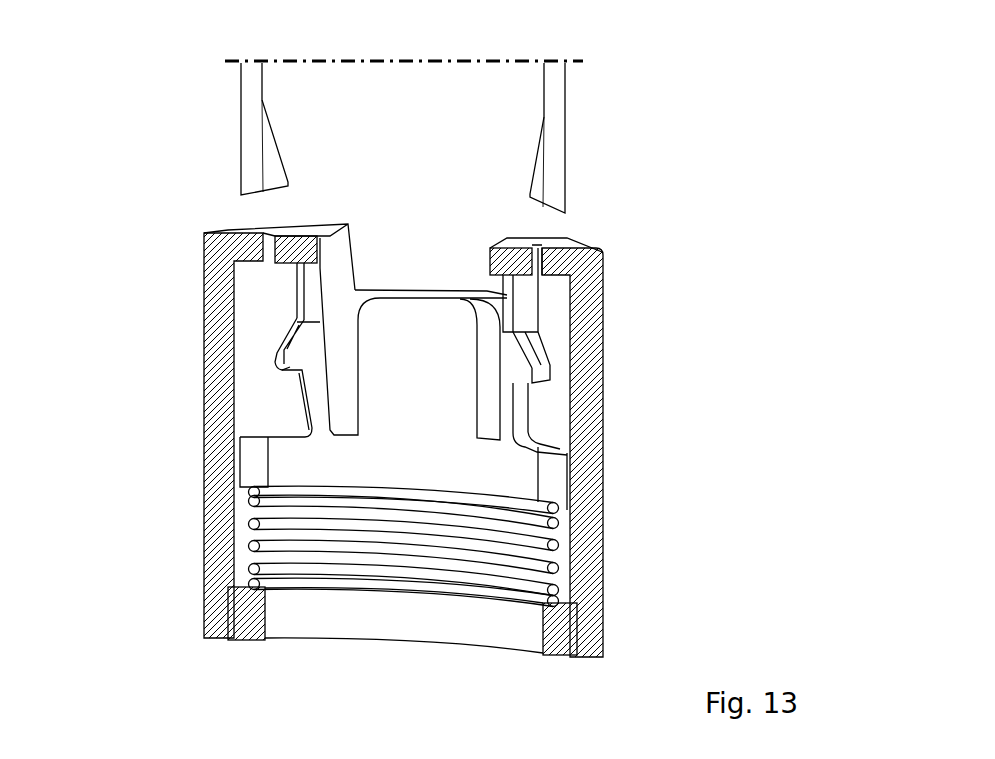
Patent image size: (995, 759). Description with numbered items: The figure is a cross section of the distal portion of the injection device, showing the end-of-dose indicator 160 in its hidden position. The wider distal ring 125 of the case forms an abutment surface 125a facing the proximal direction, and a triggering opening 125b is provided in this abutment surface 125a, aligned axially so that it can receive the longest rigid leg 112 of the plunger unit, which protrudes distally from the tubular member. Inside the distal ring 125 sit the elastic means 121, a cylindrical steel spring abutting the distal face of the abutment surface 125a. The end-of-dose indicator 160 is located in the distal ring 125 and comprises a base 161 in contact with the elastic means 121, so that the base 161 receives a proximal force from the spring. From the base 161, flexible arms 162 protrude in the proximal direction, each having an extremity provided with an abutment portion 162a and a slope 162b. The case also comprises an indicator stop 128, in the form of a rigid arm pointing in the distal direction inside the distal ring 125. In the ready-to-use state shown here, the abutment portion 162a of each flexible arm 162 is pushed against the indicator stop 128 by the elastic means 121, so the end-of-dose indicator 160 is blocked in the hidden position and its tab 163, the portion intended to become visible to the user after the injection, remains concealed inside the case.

The longest rigid leg 112 is at (255, 116).
The distal ring 125 is at (410, 412).
The abutment surface 125a is at (577, 247).
The triggering opening 125b is at (545, 243).
The indicator stop 128 is at (298, 315).
The flexible arm 162 is at (177, 361).
The abutment portion 162a is at (305, 322).
The slope 162b is at (294, 362).
The tab 163 is at (463, 379).
The end-of-dose indicator 160 is at (255, 462).
The base 161 is at (532, 490).
The elastic means 121 is at (415, 543).